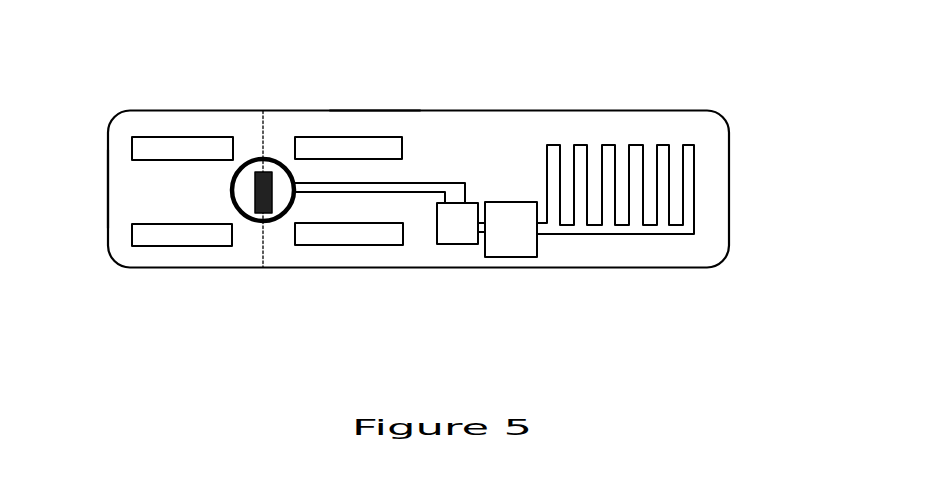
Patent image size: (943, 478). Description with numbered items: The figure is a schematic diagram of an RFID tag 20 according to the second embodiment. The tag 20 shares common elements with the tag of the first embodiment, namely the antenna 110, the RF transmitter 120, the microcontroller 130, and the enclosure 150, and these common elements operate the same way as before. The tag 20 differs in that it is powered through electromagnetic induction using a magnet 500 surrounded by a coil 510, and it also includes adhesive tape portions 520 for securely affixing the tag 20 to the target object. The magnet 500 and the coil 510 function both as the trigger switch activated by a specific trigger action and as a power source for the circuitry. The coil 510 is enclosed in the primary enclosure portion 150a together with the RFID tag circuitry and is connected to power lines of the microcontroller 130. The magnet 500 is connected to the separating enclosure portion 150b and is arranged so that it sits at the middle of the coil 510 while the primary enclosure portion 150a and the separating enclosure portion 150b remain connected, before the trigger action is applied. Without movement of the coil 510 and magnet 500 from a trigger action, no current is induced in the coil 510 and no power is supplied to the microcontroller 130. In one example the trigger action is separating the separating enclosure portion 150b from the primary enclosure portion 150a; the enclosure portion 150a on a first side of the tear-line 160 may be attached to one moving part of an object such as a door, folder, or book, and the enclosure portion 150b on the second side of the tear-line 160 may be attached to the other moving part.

The tag 20 is at (585, 84).
The antenna 110 is at (695, 170).
The RF transmitter 120 is at (510, 258).
The microcontroller 130 is at (462, 245).
The enclosure 150 is at (637, 267).
The primary enclosure portion 150a is at (378, 110).
The separating enclosure portion 150b is at (134, 110).
The tear-line 160 is at (265, 137).
The magnet 500 is at (243, 160).
The coil 510 is at (248, 222).
The adhesive tape portions 520 is at (403, 148).